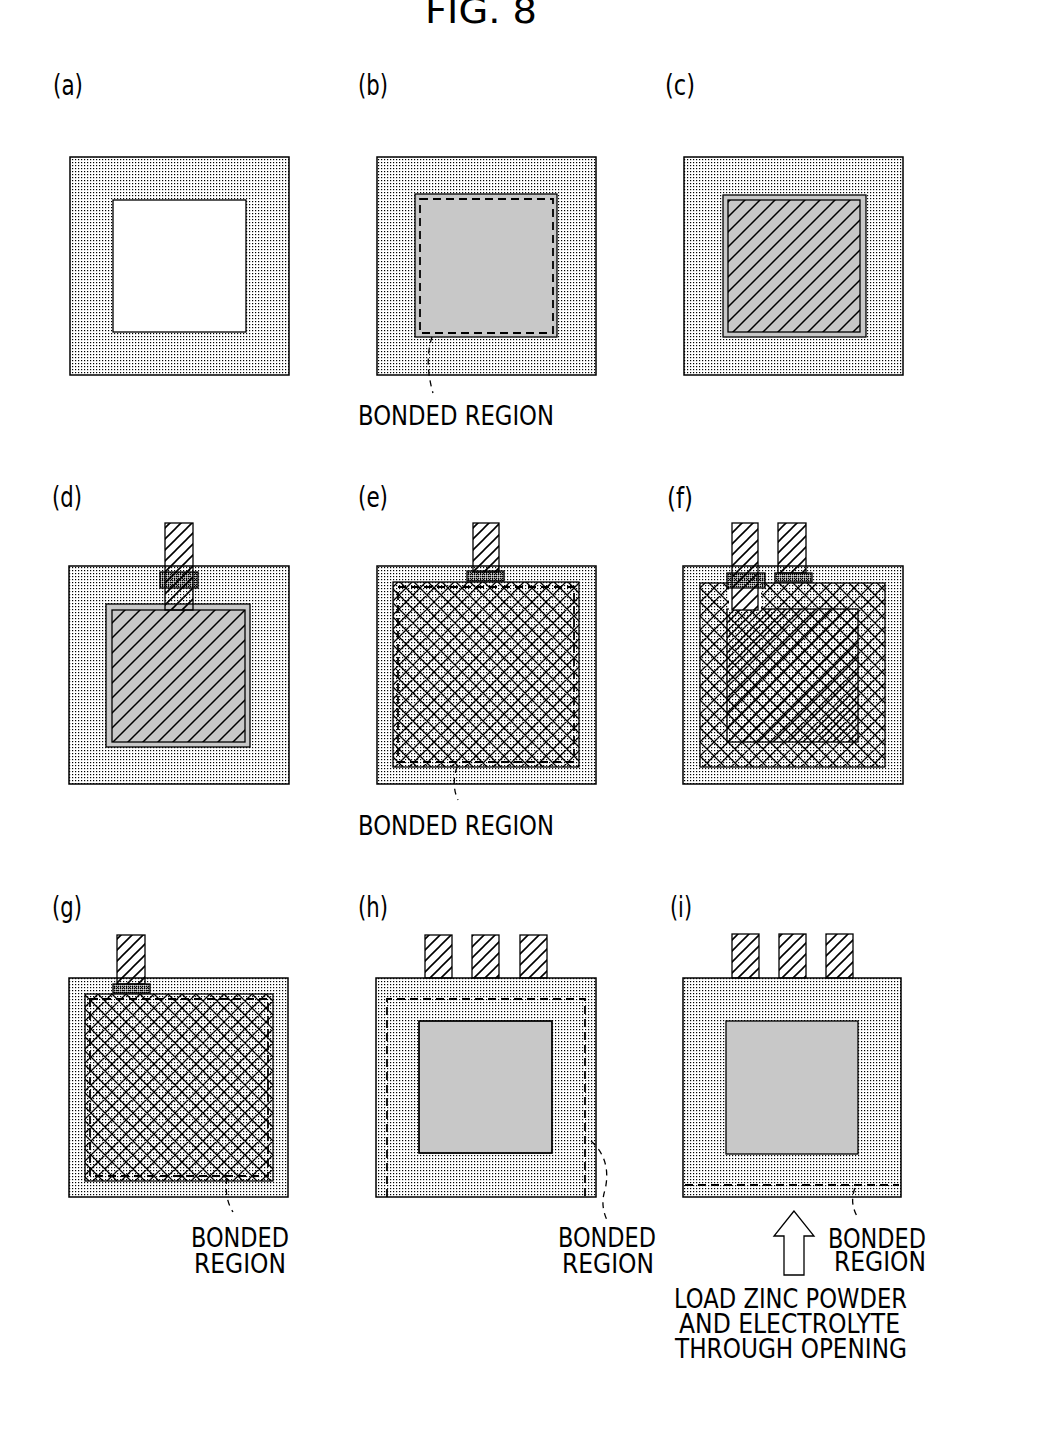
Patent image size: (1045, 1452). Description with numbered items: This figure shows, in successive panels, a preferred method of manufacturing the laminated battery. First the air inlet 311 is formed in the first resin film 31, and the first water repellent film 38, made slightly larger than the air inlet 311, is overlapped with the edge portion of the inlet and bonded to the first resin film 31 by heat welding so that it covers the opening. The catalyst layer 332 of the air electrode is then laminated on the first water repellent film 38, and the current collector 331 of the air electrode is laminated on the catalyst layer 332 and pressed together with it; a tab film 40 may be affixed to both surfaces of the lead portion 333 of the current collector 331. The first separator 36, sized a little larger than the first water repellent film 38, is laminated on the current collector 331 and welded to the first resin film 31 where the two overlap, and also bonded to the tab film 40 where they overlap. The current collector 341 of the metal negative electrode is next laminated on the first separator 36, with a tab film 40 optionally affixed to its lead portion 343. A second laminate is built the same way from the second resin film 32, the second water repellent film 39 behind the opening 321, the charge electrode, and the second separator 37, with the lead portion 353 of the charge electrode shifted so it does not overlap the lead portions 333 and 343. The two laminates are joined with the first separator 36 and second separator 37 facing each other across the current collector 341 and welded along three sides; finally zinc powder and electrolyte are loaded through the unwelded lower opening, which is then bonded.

The first resin film 31 is at (119, 172).
The air inlet 311 is at (246, 243).
The first water repellent film 38 is at (515, 222).
The catalyst layer 332 is at (835, 228).
The current collector 331 is at (128, 632).
The lead portion 333 is at (193, 532).
The tab film 40 is at (198, 580).
The first separator 36 is at (437, 620).
The lead portion 343 is at (752, 528).
The current collector 341 is at (828, 633).
The lead portion 353 is at (145, 945).
The second resin film 32 is at (100, 1186).
The second separator 37 is at (152, 1163).
The opening of second exterior film 321 is at (420, 1117).
The second water repellent film 39 is at (513, 1135).